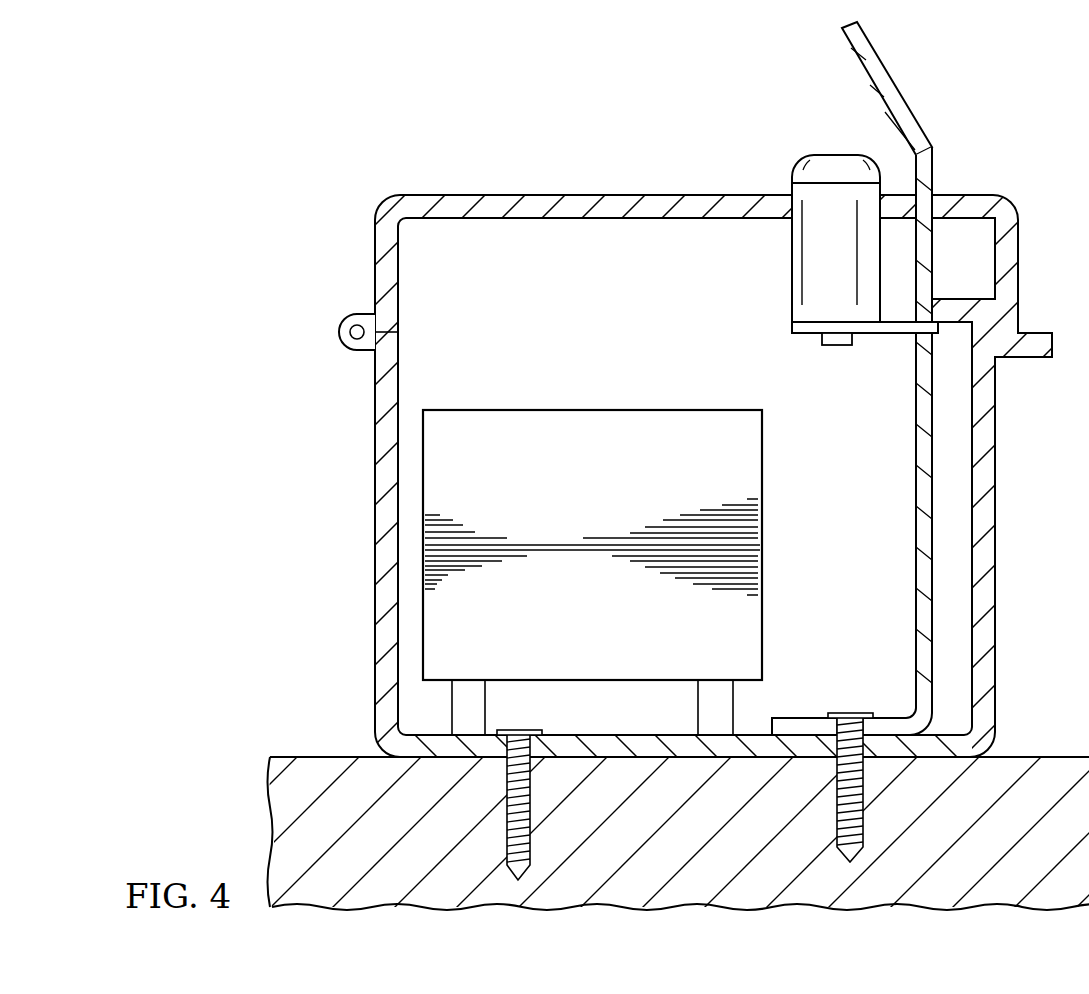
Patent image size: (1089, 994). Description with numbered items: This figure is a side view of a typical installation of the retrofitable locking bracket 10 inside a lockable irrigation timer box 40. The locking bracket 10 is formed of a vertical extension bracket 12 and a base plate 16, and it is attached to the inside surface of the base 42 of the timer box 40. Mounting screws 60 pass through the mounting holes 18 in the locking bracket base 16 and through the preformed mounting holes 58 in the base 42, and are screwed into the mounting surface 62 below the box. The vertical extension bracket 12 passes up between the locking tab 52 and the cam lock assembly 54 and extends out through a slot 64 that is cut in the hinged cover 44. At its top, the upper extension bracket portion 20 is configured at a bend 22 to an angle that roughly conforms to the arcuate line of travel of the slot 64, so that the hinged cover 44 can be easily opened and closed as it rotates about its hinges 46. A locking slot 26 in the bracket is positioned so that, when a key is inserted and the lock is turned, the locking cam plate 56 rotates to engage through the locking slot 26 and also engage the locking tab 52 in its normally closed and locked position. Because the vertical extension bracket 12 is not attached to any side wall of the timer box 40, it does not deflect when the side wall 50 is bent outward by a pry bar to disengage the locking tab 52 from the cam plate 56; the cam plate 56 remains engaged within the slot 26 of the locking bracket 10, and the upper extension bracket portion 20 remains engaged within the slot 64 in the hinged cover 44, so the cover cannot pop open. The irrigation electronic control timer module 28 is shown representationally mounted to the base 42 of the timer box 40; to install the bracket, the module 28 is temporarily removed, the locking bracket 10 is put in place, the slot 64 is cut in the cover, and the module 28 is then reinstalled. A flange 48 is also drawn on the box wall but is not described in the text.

The locking bracket 10 is at (852, 534).
The vertical extension bracket 12 is at (914, 572).
The base plate 16 is at (793, 717).
The mounting hole 18 is at (851, 716).
The upper extension bracket portion 20 is at (908, 109).
The bend 22 is at (935, 152).
The locking slot 26 is at (913, 336).
The irrigation electronic control timer module 28 is at (514, 410).
The timer box 40 is at (521, 85).
The base 42 is at (716, 757).
The hinged cover 44 is at (465, 195).
The hinges 46 is at (343, 330).
The flange 48 is at (1047, 333).
The side wall 50 is at (1021, 241).
The locking tab 52 is at (952, 299).
The cam lock assembly 54 is at (791, 270).
The locking cam plate 56 is at (805, 334).
The preformed mounting holes 58 is at (517, 735).
The mounting screws 60 is at (528, 840).
The mounting surface 62 is at (1033, 757).
The slot 64 is at (947, 196).